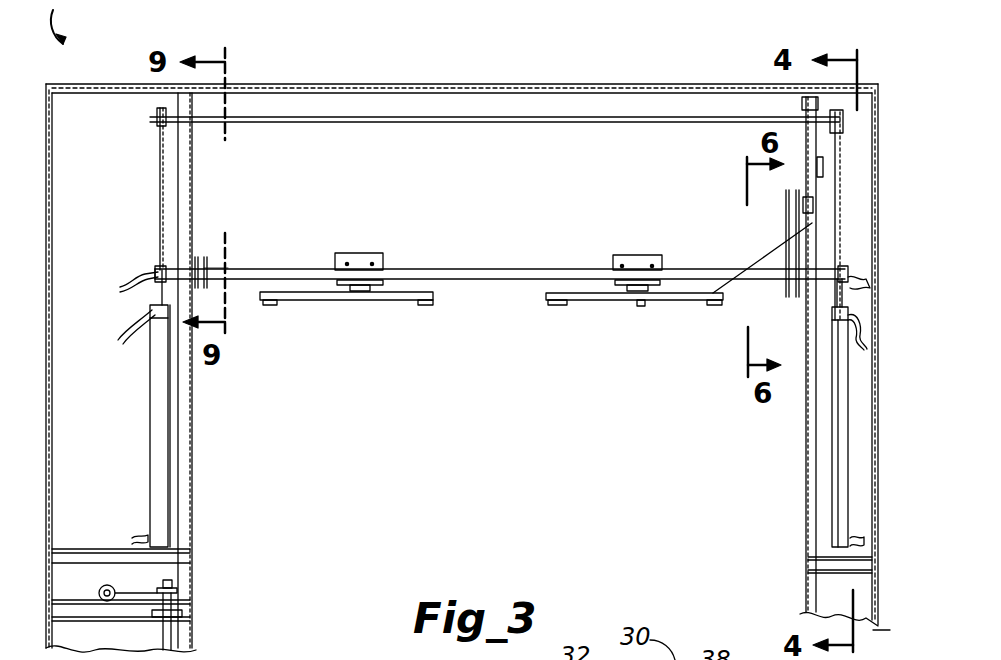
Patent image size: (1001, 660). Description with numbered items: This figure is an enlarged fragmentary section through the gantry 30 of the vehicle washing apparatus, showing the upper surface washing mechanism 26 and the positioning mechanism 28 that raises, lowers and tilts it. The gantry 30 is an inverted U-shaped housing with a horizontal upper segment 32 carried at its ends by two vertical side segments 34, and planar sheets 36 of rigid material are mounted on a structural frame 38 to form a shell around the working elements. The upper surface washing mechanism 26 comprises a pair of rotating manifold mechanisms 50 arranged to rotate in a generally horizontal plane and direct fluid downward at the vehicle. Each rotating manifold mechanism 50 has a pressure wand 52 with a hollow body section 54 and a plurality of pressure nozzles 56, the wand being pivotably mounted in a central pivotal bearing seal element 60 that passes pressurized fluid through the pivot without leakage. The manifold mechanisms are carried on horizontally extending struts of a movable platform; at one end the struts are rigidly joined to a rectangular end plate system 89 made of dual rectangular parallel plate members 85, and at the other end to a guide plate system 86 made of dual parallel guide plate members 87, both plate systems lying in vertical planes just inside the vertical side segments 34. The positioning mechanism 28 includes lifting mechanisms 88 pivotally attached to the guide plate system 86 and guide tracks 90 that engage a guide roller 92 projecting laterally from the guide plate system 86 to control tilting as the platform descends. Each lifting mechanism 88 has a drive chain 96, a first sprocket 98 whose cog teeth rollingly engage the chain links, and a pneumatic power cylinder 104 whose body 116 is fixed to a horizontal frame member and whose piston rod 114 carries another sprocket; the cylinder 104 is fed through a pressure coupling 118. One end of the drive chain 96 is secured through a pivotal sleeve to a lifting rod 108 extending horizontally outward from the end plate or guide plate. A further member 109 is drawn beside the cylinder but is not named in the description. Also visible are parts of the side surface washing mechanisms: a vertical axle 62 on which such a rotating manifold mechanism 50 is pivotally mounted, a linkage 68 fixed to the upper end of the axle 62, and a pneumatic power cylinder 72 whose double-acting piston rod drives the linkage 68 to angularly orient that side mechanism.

The upper surface washing mechanism 26 is at (246, 283).
The positioning mechanism 28 is at (708, 297).
The gantry 30 is at (43, 196).
The horizontal upper segment 32 is at (483, 87).
The vertical side segments 34 is at (43, 444).
The planar sheets 36 is at (712, 84).
The structural frame 38 is at (372, 120).
The rotating manifold mechanism 50 is at (352, 252).
The pressure wand 52 is at (641, 305).
The hollow body section 54 is at (598, 302).
The pressure nozzles 56 is at (556, 302).
The central pivotal bearing seal element 60 is at (655, 296).
The vertical axle 62 is at (167, 636).
The linkage 68 is at (133, 590).
The pneumatic power cylinder 72 is at (100, 587).
The dual rectangular parallel plate members 85 is at (206, 256).
The guide plate system 86 is at (779, 240).
The dual parallel guide plate members 87 is at (806, 208).
The lifting mechanisms 88 is at (151, 441).
The rectangular end plate system 89 is at (213, 242).
The guide tracks 90 is at (788, 280).
The guide roller 92 is at (815, 177).
The drive chain 96 is at (160, 150).
The first sprocket 98 is at (160, 110).
The pneumatic power cylinder 104 is at (838, 527).
The lifting rod 108 is at (157, 270).
The piston rod 109 is at (168, 472).
The piston rod 114 is at (155, 297).
The body 116 is at (157, 382).
The pressure coupling 118 is at (122, 340).